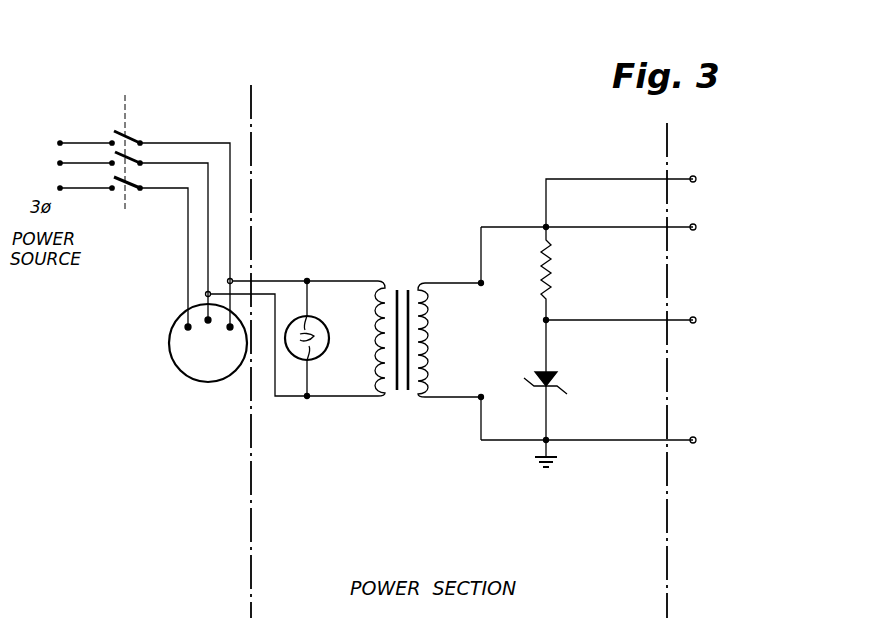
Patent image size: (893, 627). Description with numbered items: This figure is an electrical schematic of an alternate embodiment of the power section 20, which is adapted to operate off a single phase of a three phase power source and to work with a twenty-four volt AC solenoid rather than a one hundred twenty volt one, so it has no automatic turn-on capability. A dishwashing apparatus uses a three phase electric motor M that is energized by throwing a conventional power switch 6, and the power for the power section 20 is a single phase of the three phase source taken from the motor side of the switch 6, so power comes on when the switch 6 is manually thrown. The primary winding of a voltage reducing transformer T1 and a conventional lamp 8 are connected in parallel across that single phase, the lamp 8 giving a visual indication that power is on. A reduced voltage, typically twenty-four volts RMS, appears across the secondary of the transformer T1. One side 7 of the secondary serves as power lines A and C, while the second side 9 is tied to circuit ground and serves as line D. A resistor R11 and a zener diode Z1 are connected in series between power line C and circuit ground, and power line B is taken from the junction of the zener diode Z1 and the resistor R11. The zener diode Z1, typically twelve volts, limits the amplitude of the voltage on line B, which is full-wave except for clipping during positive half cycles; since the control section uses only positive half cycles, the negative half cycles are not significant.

The power switch 6 is at (128, 136).
The side of secondary winding 7 is at (458, 286).
The lamp 8 is at (314, 329).
The second side of secondary winding 9 is at (455, 400).
The power section 20 is at (591, 303).
The three phase electric motor M is at (168, 343).
The voltage reducing transformer T1 is at (402, 326).
The resistor R11 is at (568, 273).
The zener diode Z1 is at (565, 380).